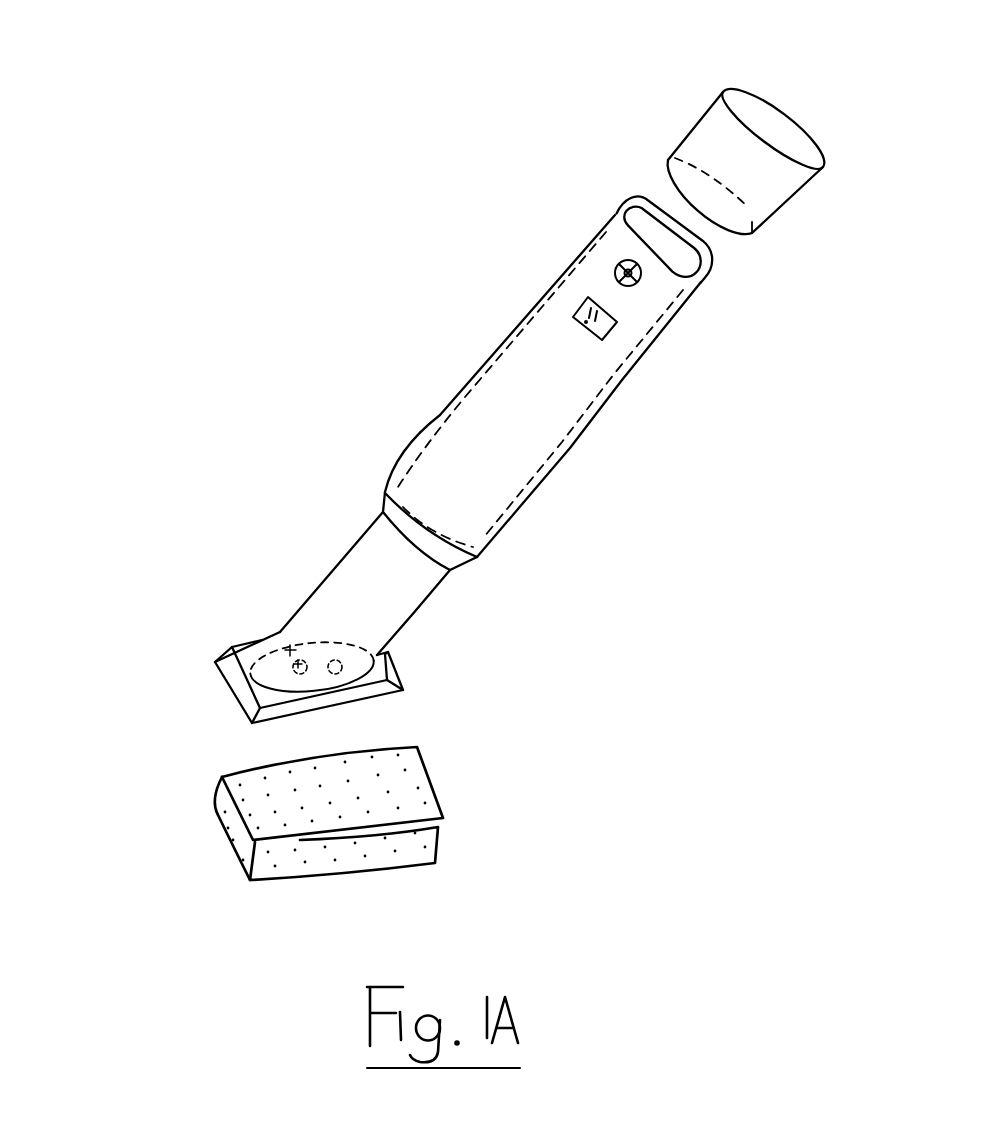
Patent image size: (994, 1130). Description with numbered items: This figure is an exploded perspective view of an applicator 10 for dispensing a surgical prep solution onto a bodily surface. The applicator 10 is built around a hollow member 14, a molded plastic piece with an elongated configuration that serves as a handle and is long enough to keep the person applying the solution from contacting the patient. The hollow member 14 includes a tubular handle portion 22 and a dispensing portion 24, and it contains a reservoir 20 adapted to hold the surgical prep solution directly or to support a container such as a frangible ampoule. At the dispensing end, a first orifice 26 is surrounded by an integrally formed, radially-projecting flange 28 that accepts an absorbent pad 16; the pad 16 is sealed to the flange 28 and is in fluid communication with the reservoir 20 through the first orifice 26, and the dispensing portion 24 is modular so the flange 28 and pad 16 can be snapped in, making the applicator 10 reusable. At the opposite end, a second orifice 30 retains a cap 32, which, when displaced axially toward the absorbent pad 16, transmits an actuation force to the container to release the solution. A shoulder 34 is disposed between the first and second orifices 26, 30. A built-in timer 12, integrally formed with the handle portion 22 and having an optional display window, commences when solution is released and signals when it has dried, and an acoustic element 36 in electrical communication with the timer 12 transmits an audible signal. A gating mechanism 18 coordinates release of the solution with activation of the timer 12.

The applicator 10 is at (202, 157).
The timer 12 is at (572, 298).
The hollow member 14 is at (396, 286).
The absorbent pad 16 is at (477, 793).
The gating mechanism 18 is at (127, 533).
The reservoir 20 is at (547, 399).
The tubular handle portion 22 is at (662, 403).
The dispensing portion 24 is at (123, 753).
The first orifice 26 is at (280, 623).
The radially-projecting flange 28 is at (420, 668).
The second orifice 30 is at (638, 220).
The cap 32 is at (746, 78).
The shoulder 34 is at (380, 497).
The acoustic element 36 is at (648, 288).